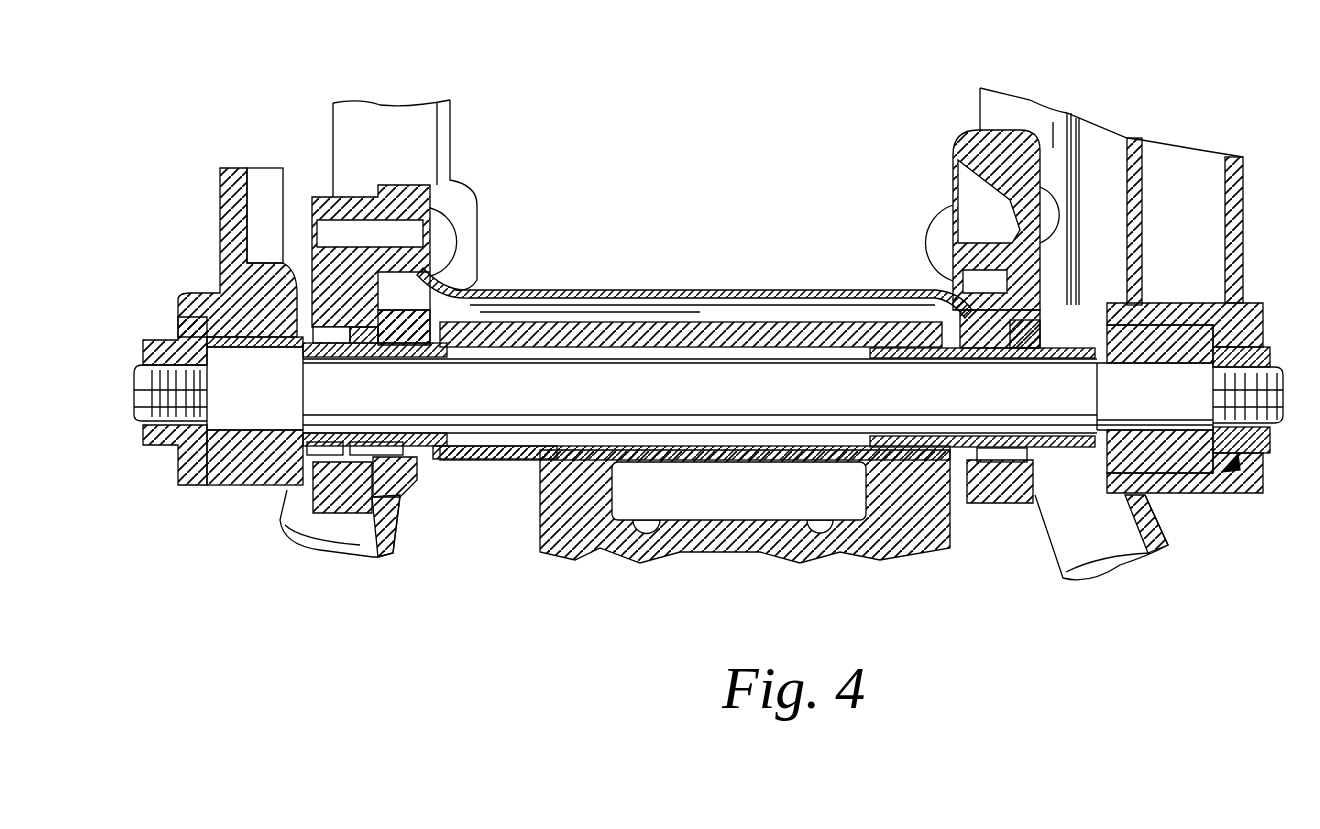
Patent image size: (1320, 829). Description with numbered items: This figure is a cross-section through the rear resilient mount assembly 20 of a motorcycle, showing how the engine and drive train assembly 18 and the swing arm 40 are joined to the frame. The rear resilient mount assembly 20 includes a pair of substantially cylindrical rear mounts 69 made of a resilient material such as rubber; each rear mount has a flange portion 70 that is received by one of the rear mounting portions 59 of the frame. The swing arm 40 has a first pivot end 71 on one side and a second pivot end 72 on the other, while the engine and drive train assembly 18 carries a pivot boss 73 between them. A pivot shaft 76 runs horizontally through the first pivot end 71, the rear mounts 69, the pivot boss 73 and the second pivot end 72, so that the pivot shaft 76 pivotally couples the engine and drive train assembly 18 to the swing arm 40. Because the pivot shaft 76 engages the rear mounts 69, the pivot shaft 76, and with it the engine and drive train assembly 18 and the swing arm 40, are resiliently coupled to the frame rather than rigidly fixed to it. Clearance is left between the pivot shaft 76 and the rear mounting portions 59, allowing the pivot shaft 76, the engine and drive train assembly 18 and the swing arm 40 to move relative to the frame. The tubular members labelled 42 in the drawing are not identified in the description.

The engine and drive train assembly 18 is at (698, 540).
The rear resilient mount assembly 20 is at (724, 88).
The swing arm 40 is at (225, 190).
The spoke / tube 42 is at (403, 117).
The rear mounting portions 59 is at (333, 297).
The rear mounts 69 is at (397, 352).
The flange portions 70 is at (366, 347).
The first pivot end 71 is at (237, 485).
The second pivot end 72 is at (1200, 493).
The pivot boss 73 is at (545, 458).
The pivot shaft 76 is at (503, 393).